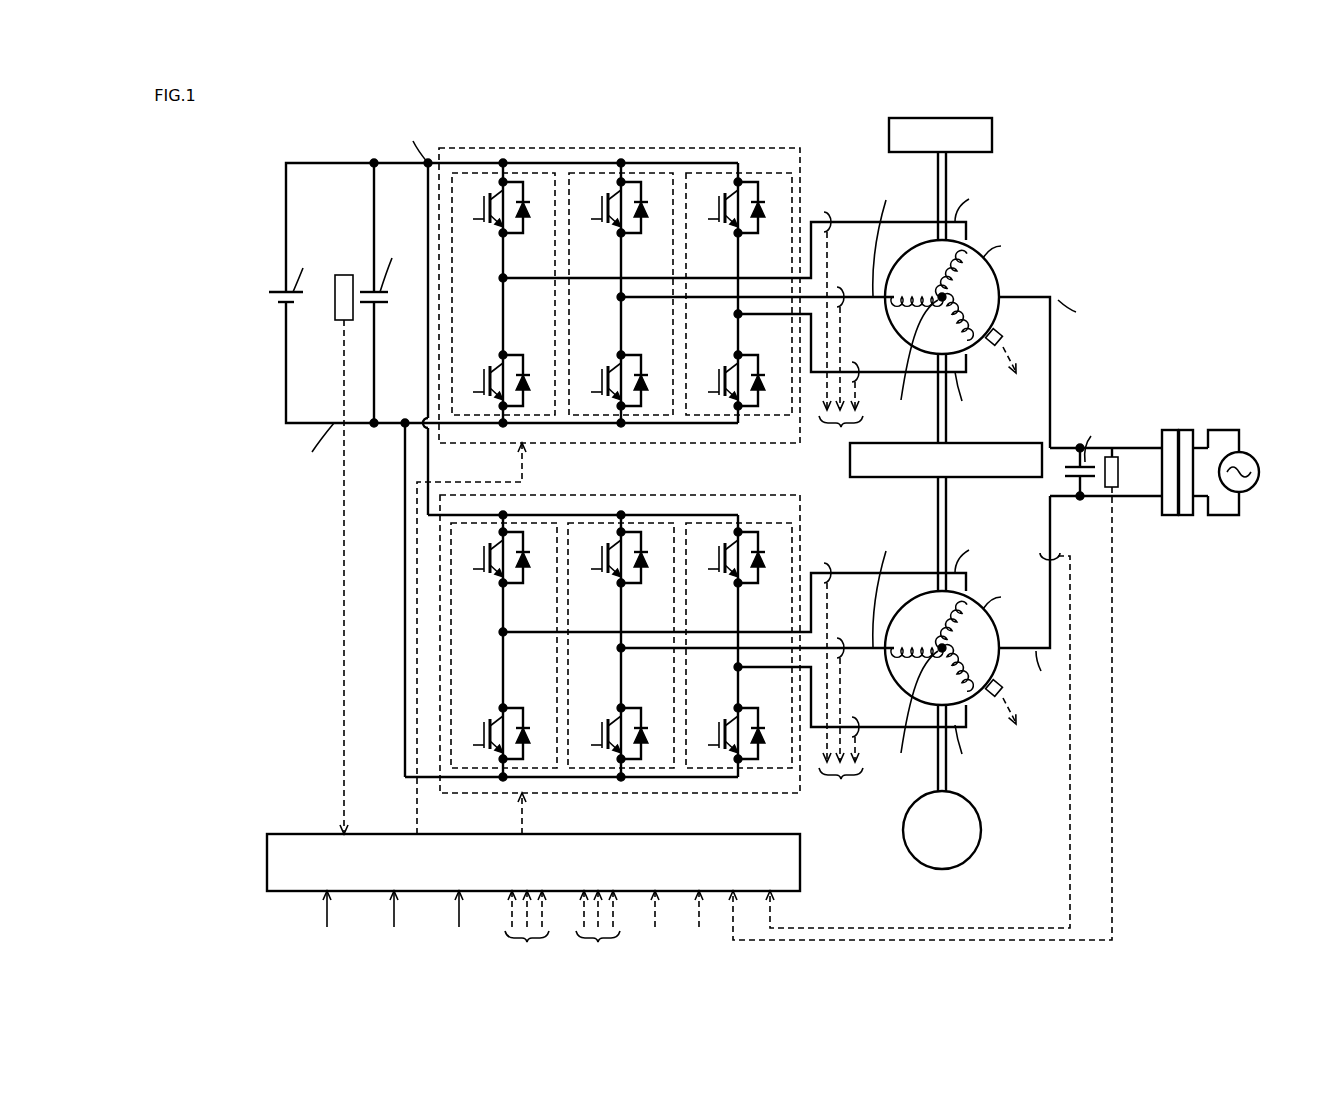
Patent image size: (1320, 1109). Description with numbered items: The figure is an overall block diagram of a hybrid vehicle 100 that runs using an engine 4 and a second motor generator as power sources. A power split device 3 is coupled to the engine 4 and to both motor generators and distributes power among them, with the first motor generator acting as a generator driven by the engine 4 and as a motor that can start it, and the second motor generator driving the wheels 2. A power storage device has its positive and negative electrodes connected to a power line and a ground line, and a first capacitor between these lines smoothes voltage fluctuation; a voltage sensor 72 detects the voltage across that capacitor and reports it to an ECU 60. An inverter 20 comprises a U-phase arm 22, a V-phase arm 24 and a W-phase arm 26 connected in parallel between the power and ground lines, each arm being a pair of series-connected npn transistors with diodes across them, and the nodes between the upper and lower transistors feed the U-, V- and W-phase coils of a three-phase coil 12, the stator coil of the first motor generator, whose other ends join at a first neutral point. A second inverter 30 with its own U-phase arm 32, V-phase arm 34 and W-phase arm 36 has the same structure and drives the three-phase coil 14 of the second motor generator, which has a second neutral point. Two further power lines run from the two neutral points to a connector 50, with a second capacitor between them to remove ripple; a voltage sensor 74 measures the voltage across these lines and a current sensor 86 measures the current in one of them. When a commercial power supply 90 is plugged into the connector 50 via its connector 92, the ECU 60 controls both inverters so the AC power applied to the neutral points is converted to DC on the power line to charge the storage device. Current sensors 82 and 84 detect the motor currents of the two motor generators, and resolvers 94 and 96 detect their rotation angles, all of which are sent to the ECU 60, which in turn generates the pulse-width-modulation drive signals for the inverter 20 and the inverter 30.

The hybrid vehicle 100 is at (274, 128).
The wheel 2 is at (983, 830).
The power split device 3 is at (980, 443).
The engine 4 is at (889, 134).
The three-phase coil 12 is at (949, 260).
The three-phase coil 14 is at (949, 611).
The inverter 20 is at (705, 443).
The U-phase arm 22 is at (524, 173).
The V-phase arm 24 is at (642, 173).
The W-phase arm 26 is at (759, 173).
The inverter 30 is at (705, 793).
The U-phase arm 32 is at (537, 523).
The V-phase arm 34 is at (650, 523).
The W-phase arm 36 is at (770, 523).
The connector 50 is at (1170, 430).
The ECU 60 is at (297, 834).
The voltage sensor 72 is at (340, 275).
The voltage sensor 74 is at (1118, 468).
The current sensor 82 is at (826, 212).
The current sensor 84 is at (826, 563).
The current sensor 86 is at (1042, 556).
The commercial power supply 90 is at (1243, 452).
The connector 92 is at (1187, 430).
The resolver 94 is at (1004, 333).
The resolver 96 is at (996, 704).